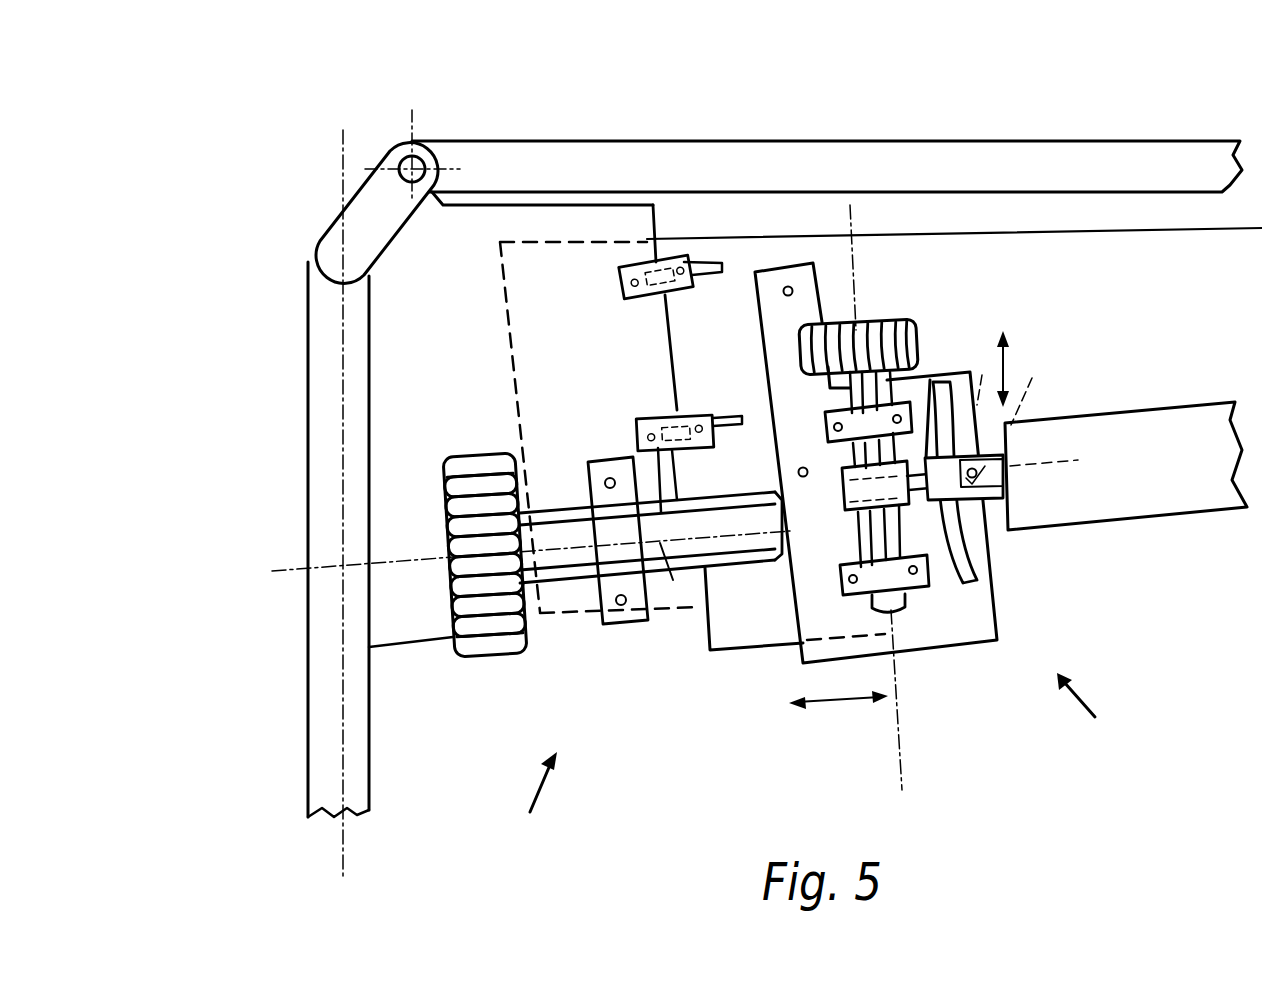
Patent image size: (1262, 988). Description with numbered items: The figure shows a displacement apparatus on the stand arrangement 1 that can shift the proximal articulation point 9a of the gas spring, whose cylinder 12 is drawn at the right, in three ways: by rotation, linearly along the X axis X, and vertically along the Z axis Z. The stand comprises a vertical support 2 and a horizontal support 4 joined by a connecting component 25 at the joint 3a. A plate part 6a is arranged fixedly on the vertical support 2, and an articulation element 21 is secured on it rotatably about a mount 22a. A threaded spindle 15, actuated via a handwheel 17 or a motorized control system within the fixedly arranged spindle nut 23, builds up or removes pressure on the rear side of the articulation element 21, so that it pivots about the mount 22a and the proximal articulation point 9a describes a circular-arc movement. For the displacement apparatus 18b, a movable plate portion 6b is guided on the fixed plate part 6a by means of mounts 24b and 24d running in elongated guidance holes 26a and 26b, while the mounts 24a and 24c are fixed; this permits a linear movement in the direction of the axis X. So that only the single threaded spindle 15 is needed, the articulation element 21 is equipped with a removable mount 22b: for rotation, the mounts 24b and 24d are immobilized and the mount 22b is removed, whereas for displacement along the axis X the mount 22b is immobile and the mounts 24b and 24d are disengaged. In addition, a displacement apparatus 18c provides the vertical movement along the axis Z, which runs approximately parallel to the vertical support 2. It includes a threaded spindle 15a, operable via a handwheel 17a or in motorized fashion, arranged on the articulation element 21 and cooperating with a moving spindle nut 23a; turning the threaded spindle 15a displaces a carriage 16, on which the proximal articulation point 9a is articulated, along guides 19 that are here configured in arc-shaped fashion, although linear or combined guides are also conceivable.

The stand arrangement 1 is at (236, 112).
The vertical support 2 is at (308, 535).
The joint 3a is at (392, 153).
The horizontal support 4 is at (840, 160).
The plate part 6a is at (456, 370).
The plate portion 6b is at (730, 369).
The proximal articulation point 9a is at (1005, 468).
The cylinder 12 is at (1172, 492).
The threaded spindle 15 is at (560, 555).
The threaded spindle 15a is at (870, 545).
The carriage 16 is at (940, 480).
The handwheel 17 is at (478, 600).
The handwheel 17a is at (915, 333).
The displacement apparatus 18b is at (527, 807).
The displacement apparatus 18c is at (1103, 723).
The guides 19 is at (978, 580).
The articulation element 21 is at (973, 622).
The mount 22a is at (792, 291).
The removable mount 22b is at (799, 472).
The spindle nut 23 is at (623, 573).
The spindle nut 23a is at (893, 480).
The mount 24a is at (632, 277).
The mount 24b is at (672, 262).
The mount 24c is at (673, 580).
The mount 24d is at (717, 540).
The component 25 is at (355, 224).
The elongated guidance hole 26a is at (717, 262).
The elongated guidance hole 26b is at (725, 417).
The X axis X is at (275, 572).
The Z axis Z is at (905, 765).